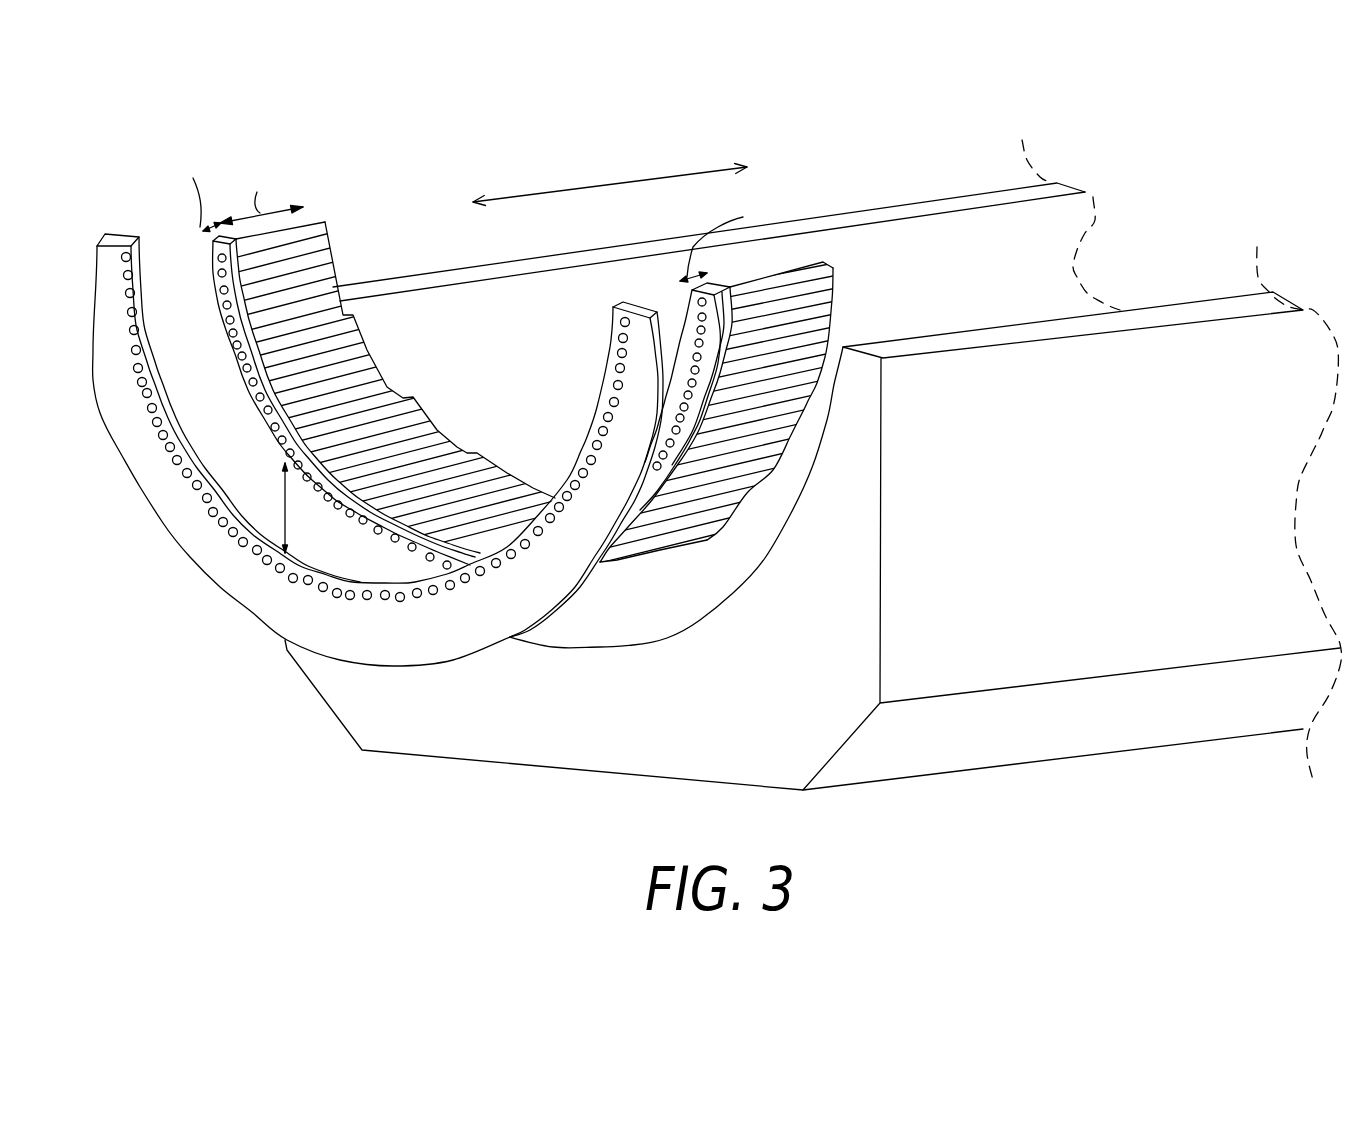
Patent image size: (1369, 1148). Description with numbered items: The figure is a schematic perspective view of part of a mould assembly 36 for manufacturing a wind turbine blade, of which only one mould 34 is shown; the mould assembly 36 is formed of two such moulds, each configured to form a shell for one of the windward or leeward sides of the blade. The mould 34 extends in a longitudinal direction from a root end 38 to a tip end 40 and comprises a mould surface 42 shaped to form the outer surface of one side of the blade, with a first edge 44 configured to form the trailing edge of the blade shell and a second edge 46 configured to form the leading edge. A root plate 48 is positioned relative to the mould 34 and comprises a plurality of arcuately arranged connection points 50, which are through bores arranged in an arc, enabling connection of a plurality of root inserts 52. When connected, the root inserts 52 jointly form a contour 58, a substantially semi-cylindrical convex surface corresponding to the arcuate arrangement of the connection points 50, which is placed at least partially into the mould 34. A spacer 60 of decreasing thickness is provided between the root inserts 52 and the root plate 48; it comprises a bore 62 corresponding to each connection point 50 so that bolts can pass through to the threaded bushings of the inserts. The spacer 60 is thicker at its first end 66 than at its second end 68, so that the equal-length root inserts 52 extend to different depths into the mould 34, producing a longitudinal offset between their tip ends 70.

The mould 34 is at (1011, 651).
The mould assembly 36 is at (317, 142).
The root end 38 is at (547, 717).
The tip end 40 is at (990, 178).
The mould surface 42 is at (957, 306).
The first edge 44 is at (1020, 320).
The second edge 46 is at (862, 228).
The root plate 48 is at (212, 567).
The connection points 50 is at (147, 393).
The root inserts 52 is at (360, 362).
The contour 58 is at (702, 557).
The spacer 60 is at (280, 447).
The bores 62 is at (240, 350).
The first end 66 is at (676, 291).
The second end 68 is at (202, 255).
The tip ends 70 is at (498, 467).